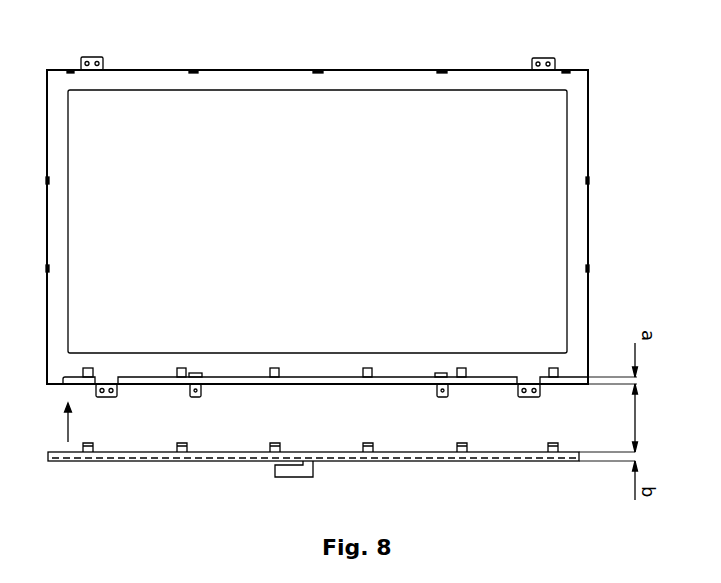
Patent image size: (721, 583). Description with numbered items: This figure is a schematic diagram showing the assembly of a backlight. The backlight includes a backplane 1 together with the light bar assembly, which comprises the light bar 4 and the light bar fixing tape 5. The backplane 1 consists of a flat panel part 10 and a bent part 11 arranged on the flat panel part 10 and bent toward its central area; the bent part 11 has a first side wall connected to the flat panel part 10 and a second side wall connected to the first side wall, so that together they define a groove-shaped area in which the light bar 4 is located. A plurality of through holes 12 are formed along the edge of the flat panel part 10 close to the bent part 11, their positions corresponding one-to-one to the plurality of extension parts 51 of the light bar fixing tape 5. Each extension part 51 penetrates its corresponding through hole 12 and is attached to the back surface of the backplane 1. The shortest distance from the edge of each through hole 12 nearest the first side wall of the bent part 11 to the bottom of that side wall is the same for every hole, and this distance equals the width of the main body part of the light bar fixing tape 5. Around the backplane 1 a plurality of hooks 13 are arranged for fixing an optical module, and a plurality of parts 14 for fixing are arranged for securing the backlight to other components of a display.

The backplane 1 is at (598, 187).
The flat panel part 10 is at (582, 300).
The bent part 11 is at (480, 379).
The through hole 12 is at (276, 370).
The hook 13 is at (440, 68).
The part for fixing 14 is at (556, 61).
The light bar 4 is at (375, 460).
The light bar fixing tape 5 is at (318, 453).
The extension part 51 is at (184, 448).